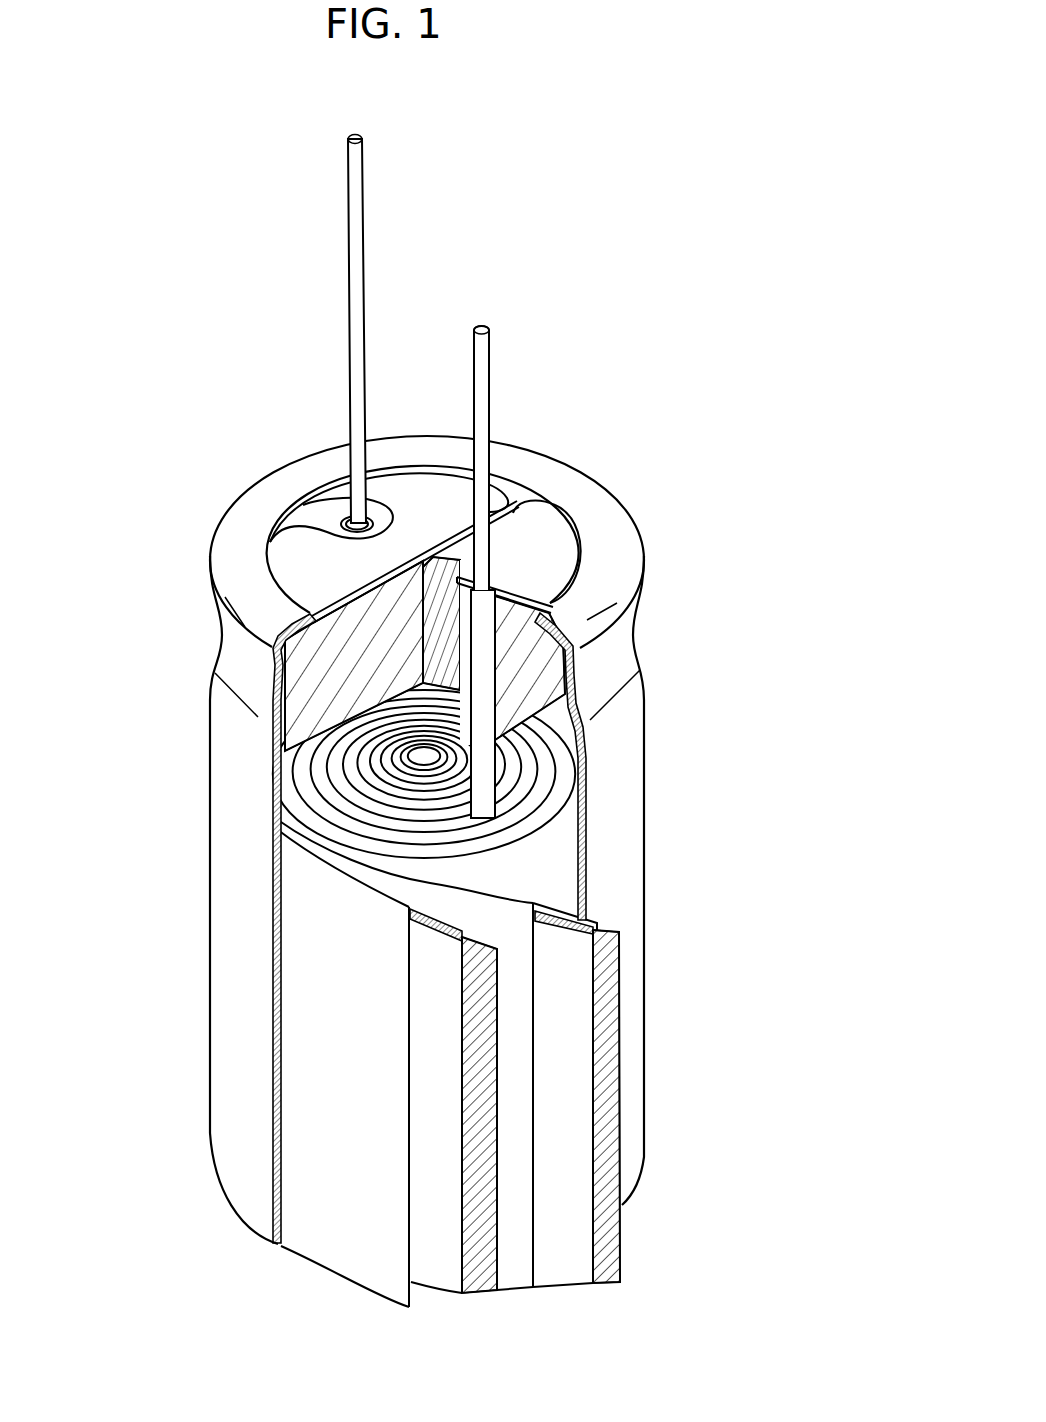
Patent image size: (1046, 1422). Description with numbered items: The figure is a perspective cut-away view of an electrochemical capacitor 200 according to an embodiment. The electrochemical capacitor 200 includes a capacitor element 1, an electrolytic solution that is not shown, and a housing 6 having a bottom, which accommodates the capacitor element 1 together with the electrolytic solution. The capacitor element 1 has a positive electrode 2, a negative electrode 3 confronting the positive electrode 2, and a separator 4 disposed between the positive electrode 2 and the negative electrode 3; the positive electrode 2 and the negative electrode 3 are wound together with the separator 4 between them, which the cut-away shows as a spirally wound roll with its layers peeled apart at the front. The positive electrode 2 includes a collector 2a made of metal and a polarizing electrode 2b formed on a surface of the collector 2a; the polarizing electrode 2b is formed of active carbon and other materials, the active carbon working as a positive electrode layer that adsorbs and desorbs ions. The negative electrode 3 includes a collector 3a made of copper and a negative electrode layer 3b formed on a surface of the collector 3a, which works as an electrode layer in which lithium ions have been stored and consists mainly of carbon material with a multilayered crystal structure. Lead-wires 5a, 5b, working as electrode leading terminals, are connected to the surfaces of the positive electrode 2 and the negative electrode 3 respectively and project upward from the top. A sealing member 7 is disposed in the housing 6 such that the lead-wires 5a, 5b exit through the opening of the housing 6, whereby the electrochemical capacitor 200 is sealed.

The electrochemical capacitor 200 is at (287, 442).
The capacitor element 1 is at (778, 980).
The positive electrode 2 is at (724, 962).
The collector 2a is at (617, 963).
The polarizing electrode 2b is at (578, 1020).
The negative electrode 3 is at (724, 1104).
The collector 3a is at (490, 1083).
The negative electrode layer 3b is at (443, 1124).
The separator 4 is at (393, 1235).
The lead-wire 5a is at (362, 220).
The lead-wire 5b is at (488, 355).
The housing 6 is at (633, 707).
The sealing member 7 is at (305, 677).